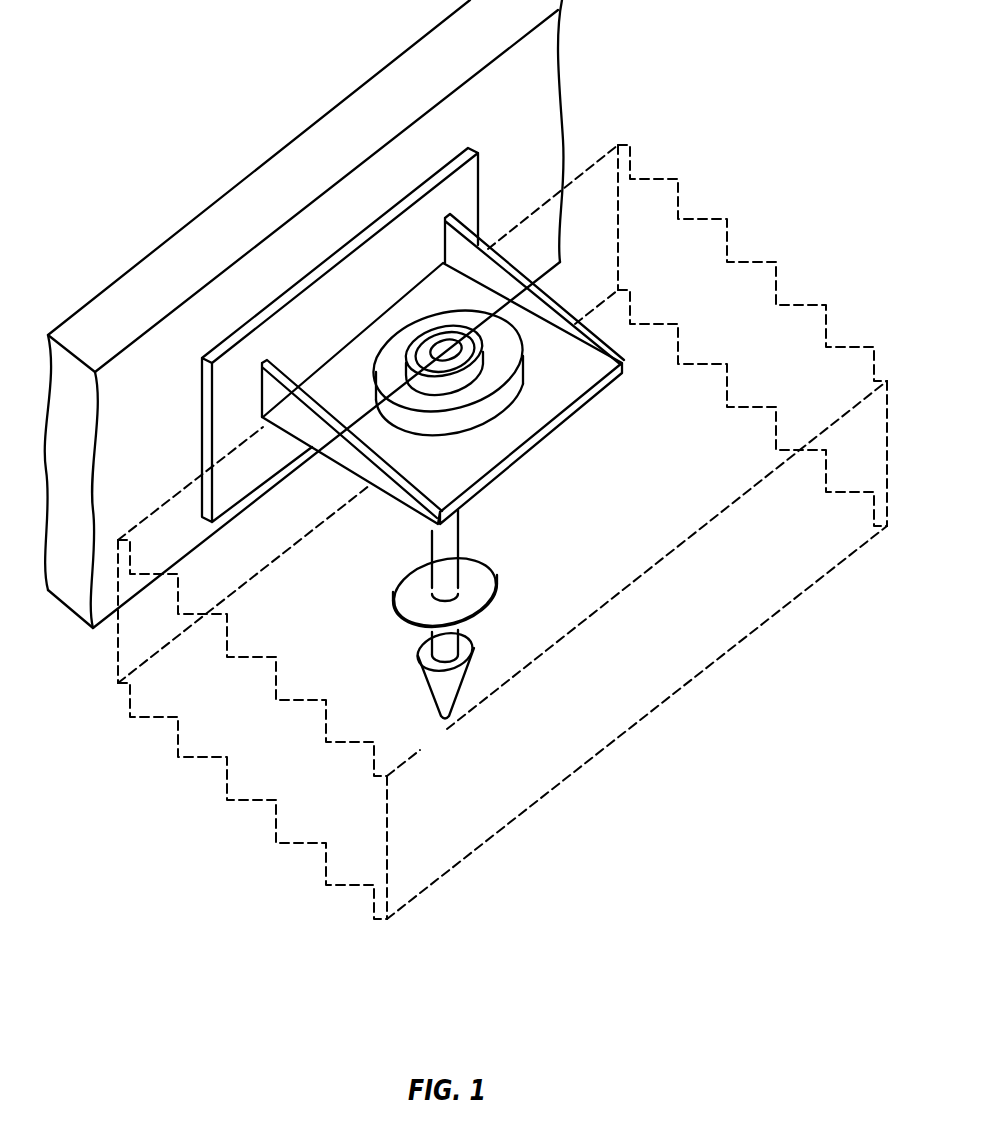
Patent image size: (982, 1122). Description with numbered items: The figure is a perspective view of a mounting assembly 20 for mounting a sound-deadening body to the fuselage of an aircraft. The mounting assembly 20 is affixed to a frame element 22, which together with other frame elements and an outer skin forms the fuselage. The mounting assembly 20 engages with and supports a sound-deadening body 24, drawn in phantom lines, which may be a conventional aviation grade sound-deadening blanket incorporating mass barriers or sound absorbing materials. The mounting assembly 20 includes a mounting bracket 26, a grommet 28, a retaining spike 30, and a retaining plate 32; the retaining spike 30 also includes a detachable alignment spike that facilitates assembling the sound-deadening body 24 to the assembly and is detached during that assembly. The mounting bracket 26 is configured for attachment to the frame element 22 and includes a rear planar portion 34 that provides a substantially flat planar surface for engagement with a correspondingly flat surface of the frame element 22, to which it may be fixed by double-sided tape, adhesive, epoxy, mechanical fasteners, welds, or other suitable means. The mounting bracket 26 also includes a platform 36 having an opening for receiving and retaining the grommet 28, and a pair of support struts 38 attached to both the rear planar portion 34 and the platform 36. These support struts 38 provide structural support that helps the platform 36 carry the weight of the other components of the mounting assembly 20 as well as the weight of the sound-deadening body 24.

The mounting assembly 20 is at (413, 423).
The frame element 22 is at (233, 207).
The sound-deadening body 24 is at (272, 822).
The mounting bracket 26 is at (371, 352).
The grommet 28 is at (513, 377).
The retaining spike 30 is at (456, 530).
The retaining plate 32 is at (483, 575).
The rear planar portion 34 is at (437, 182).
The platform 36 is at (553, 400).
The support struts 38 is at (277, 393).